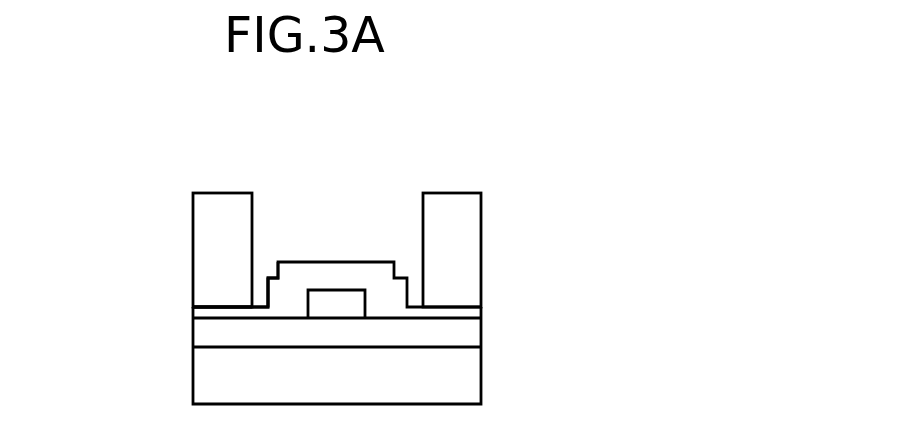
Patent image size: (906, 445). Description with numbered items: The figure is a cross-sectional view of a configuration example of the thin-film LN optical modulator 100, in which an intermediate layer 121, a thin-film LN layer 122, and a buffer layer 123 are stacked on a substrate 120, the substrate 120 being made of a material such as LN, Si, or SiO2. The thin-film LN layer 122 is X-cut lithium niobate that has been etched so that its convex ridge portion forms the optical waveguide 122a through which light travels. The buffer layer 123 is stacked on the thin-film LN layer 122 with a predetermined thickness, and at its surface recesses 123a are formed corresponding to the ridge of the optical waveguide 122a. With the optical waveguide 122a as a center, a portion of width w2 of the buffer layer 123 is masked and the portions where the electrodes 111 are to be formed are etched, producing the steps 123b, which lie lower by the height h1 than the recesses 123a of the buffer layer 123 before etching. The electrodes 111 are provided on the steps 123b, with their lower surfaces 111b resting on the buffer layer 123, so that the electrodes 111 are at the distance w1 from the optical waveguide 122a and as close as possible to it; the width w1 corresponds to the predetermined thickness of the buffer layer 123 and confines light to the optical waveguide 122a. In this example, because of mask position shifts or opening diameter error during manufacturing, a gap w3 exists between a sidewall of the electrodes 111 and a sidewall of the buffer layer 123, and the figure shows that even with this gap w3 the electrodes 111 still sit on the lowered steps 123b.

The thin-film LN optical modulator 100 is at (505, 151).
The electrodes 111 is at (193, 228).
The bottom surface of electrode 111b is at (220, 309).
The substrate 120 is at (467, 394).
The intermediate layer 121 is at (467, 366).
The thin-film LN layer 122 is at (467, 336).
The optical waveguide 122a is at (348, 288).
The buffer layer 123 is at (394, 297).
The recesses 123a is at (269, 276).
The steps 123b is at (230, 292).
The width w1 is at (254, 297).
The width w2 is at (421, 232).
The gap w3 is at (268, 278).
The height h1 is at (252, 278).